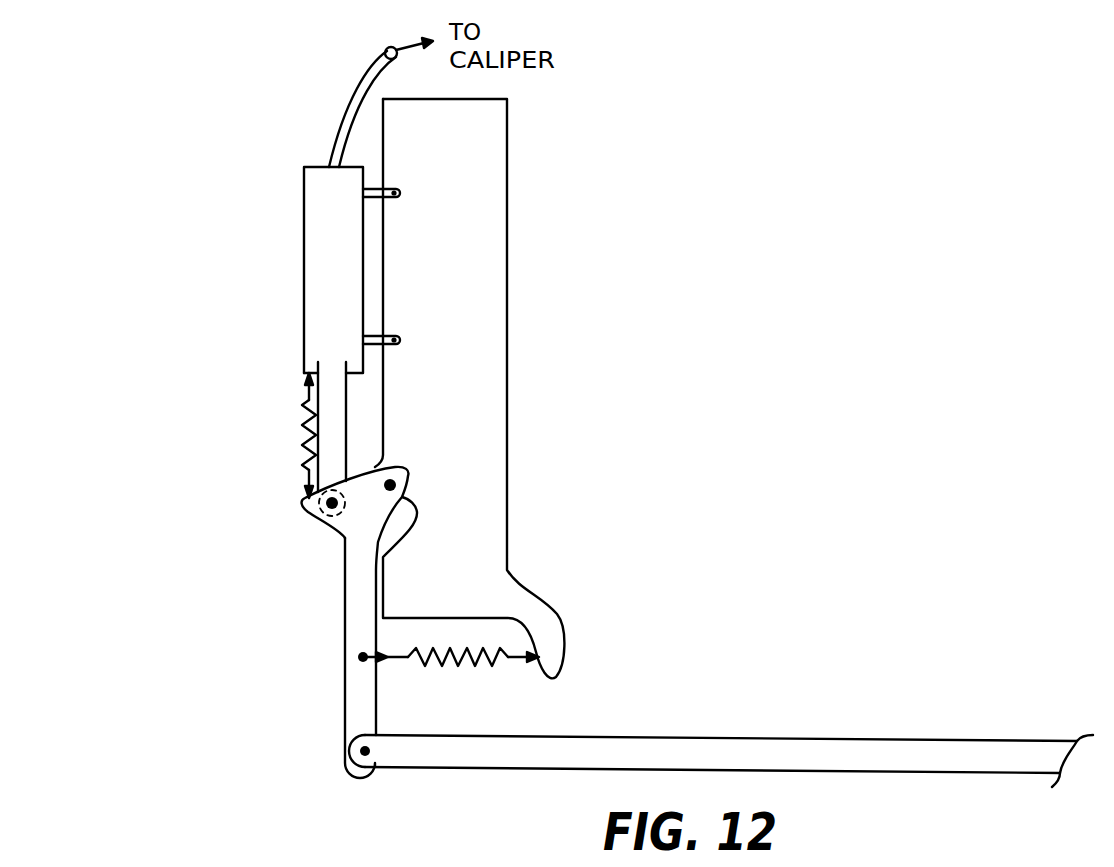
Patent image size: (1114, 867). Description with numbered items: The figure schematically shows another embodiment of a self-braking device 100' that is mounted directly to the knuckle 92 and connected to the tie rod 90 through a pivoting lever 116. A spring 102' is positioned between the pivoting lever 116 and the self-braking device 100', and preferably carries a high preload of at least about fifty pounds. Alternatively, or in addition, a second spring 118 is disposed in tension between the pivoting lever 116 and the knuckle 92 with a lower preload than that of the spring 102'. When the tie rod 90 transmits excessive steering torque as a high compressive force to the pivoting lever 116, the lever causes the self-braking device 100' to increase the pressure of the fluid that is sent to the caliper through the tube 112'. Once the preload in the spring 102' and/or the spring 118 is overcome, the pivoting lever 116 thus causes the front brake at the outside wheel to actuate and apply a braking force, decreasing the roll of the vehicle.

The tie rod 90 is at (948, 759).
The knuckle 92 is at (478, 310).
The self-braking device 100' is at (292, 329).
The spring 102' is at (258, 435).
The tube 112' is at (338, 102).
The pivoting lever 116 is at (355, 580).
The spring 118 is at (463, 658).